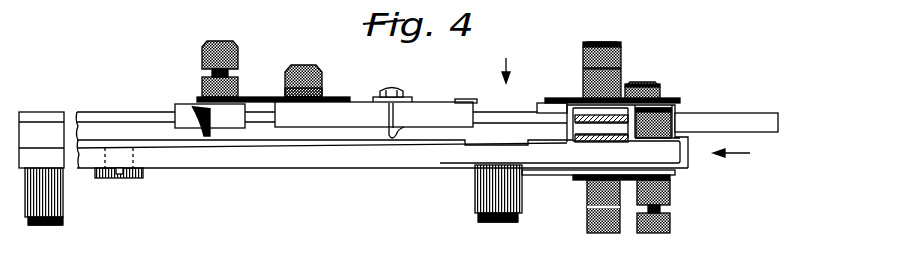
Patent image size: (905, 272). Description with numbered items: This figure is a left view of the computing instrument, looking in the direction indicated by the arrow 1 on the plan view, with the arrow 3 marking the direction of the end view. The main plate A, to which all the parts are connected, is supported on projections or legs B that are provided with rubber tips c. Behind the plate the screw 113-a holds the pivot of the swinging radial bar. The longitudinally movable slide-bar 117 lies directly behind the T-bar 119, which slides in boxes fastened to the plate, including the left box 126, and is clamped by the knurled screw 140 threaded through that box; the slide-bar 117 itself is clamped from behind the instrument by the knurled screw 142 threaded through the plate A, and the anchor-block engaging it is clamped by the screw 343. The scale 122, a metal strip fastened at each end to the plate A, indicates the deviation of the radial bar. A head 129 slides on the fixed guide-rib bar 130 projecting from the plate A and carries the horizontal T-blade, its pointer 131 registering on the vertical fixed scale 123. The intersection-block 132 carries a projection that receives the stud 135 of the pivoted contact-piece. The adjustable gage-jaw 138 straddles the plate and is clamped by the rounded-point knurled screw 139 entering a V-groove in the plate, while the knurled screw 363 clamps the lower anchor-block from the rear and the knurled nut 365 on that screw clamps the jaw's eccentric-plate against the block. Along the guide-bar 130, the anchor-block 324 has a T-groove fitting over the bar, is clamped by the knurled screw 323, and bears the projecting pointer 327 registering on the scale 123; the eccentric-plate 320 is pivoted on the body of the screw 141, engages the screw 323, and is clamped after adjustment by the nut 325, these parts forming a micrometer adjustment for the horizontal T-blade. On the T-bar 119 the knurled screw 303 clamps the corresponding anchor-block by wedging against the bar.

The plan view arrow 1 is at (512, 70).
The end view arrow 3 is at (742, 154).
The main plate A is at (382, 154).
The projections or legs B is at (63, 198).
The rubber tips c is at (273, 229).
The screw 113-a is at (128, 174).
The slide-bar 117 is at (603, 141).
The T-bar 119 is at (662, 90).
The scale 122 is at (540, 102).
The vertical fixed scale 123 is at (282, 147).
The left box 126 is at (575, 119).
The head 129 is at (432, 102).
The fixed guide-rib bar 130 is at (148, 111).
The pointer 131 is at (391, 142).
The intersection-block 132 is at (466, 98).
The stud 135 is at (390, 88).
The adjustable gage-jaw 138 is at (741, 118).
The knurled screw 139 is at (646, 82).
The knurled screw 140 is at (619, 74).
The screw 141 is at (323, 75).
The knurled screw 142 is at (587, 195).
The knurled screw 303 is at (622, 47).
The eccentric-plate 320 is at (323, 96).
The knurled screw 323 is at (239, 52).
The anchor-block 324 is at (210, 116).
The nut 325 is at (239, 92).
The projecting pointer 327 is at (212, 136).
The screw 343 is at (587, 219).
The knurled screw 363 is at (671, 219).
The knurled nut 365 is at (671, 187).